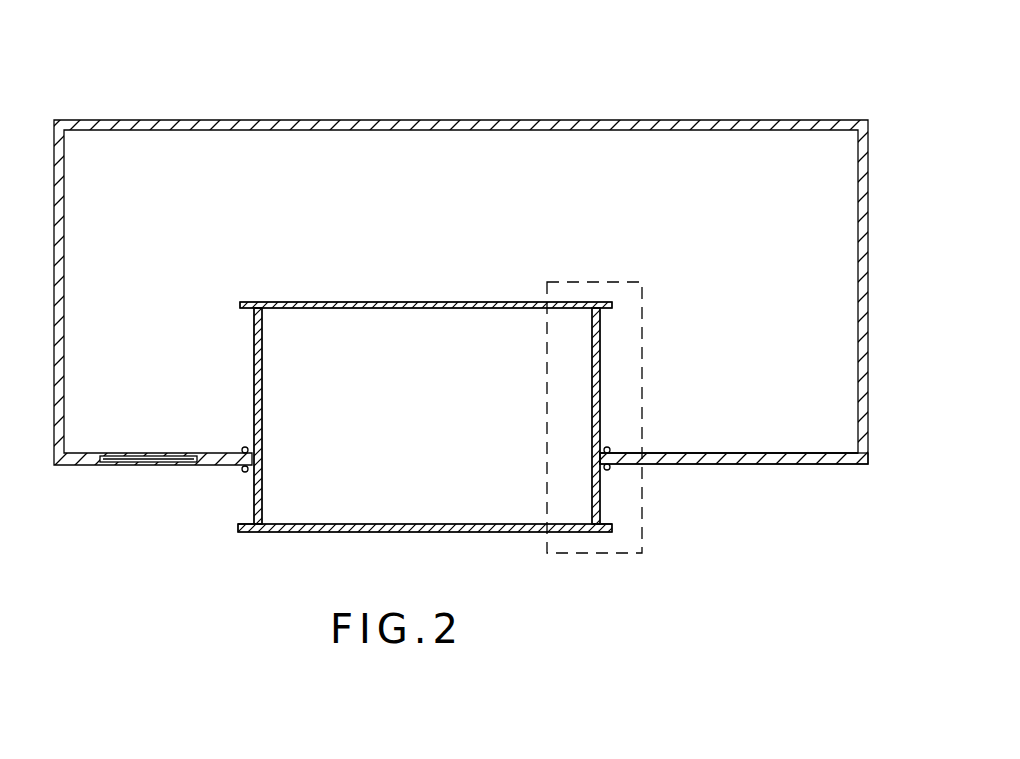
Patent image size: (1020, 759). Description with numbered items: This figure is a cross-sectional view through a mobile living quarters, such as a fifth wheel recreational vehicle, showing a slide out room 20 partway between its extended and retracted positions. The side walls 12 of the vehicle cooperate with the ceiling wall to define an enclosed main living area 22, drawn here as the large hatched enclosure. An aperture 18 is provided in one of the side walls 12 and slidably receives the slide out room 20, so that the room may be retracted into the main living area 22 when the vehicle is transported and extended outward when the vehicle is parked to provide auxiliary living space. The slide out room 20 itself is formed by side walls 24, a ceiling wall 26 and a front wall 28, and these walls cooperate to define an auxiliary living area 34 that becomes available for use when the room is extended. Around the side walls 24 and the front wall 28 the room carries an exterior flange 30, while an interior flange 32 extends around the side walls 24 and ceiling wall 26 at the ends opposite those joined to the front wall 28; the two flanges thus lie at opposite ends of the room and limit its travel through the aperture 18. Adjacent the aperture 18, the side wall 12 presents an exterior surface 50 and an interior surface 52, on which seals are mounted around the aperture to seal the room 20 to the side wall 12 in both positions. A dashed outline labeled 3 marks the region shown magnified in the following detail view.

The side wall 12 is at (872, 150).
The main living area 22 is at (303, 150).
The slide out room 20 is at (288, 483).
The ceiling wall 26 is at (386, 302).
The front wall 28 is at (388, 533).
The side walls 24 is at (262, 353).
The interior flange 32 is at (243, 310).
The exterior flange 30 is at (240, 532).
The auxiliary living area 34 is at (402, 440).
The aperture 18 is at (608, 458).
The exterior surface 50 is at (705, 465).
The interior surface 52 is at (690, 453).
The section detail of FIG. 3 is at (592, 280).